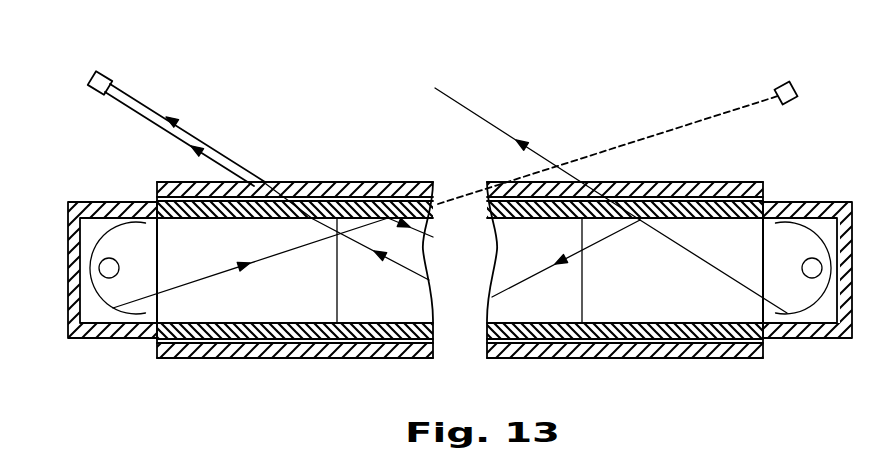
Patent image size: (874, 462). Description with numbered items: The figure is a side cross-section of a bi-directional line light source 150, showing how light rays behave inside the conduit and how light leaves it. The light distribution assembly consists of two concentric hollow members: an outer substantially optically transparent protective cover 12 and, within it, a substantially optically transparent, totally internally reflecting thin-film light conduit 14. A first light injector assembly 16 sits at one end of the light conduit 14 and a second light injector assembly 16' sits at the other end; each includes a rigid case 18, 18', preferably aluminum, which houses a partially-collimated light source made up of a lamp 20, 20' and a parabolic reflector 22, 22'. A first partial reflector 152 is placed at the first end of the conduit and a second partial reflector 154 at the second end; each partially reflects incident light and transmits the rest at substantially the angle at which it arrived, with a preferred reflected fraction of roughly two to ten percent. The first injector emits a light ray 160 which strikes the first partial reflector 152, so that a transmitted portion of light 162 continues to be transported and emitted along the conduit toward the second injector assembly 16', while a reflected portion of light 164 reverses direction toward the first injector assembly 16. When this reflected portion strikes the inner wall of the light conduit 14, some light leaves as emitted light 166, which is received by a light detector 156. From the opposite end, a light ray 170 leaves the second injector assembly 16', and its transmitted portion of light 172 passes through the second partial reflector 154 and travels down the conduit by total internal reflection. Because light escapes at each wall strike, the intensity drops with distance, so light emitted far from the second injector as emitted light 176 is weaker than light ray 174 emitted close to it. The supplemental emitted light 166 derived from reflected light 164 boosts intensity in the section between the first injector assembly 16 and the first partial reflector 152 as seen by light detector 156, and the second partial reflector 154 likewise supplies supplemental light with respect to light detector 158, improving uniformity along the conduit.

The protective cover 12 is at (222, 360).
The light conduit 14 is at (176, 343).
The first light injector assembly 16 is at (108, 313).
The second light injector assembly 16' is at (815, 232).
The case 18 is at (90, 307).
The case of second light injector assembly 18' is at (800, 228).
The lamp 20 is at (67, 283).
The lamp of second light injector assembly 20' is at (834, 342).
The parabolic reflector 22 is at (95, 236).
The parabolic reflector of second light injector assembly 22' is at (804, 311).
The bi-directional line light source 150 is at (650, 110).
The first partial reflector 152 is at (337, 293).
The second partial reflector 154 is at (583, 293).
The light detector 156 is at (105, 75).
The light detector 158 is at (782, 83).
The light ray 160 is at (177, 287).
The transmitted portion of light 162 is at (358, 222).
The reflected portion of light 164 is at (327, 222).
The emitted light 166 is at (153, 122).
The light ray 170 is at (720, 268).
The transmitted portion of light 172 is at (388, 258).
The light ray 174 is at (485, 118).
The emitted light 176 is at (184, 128).